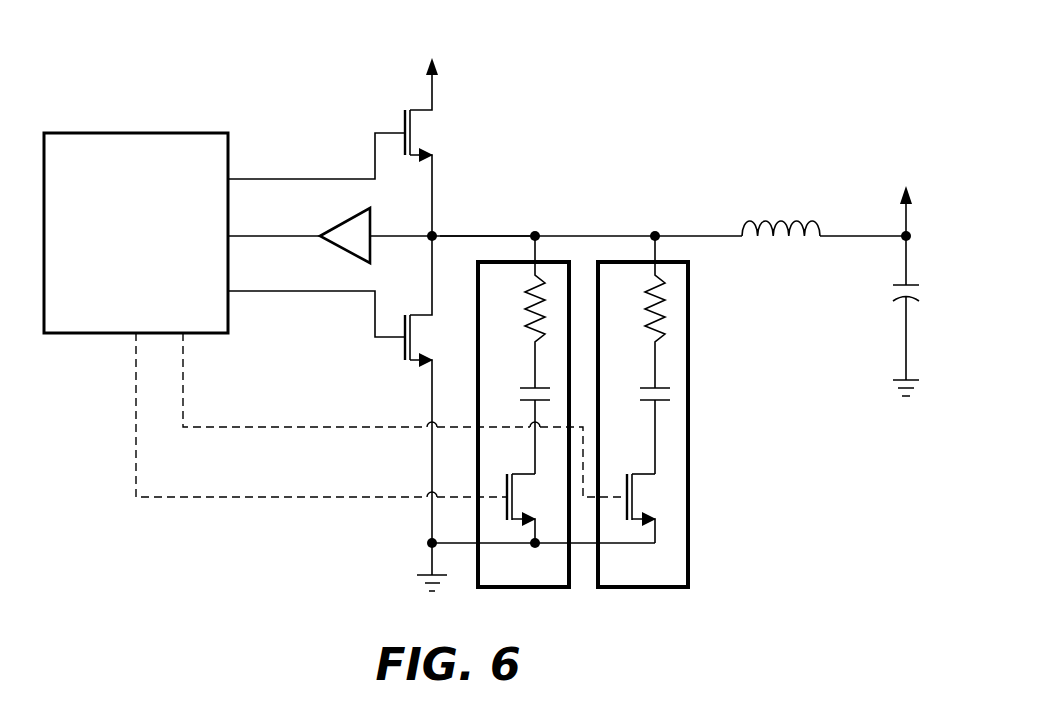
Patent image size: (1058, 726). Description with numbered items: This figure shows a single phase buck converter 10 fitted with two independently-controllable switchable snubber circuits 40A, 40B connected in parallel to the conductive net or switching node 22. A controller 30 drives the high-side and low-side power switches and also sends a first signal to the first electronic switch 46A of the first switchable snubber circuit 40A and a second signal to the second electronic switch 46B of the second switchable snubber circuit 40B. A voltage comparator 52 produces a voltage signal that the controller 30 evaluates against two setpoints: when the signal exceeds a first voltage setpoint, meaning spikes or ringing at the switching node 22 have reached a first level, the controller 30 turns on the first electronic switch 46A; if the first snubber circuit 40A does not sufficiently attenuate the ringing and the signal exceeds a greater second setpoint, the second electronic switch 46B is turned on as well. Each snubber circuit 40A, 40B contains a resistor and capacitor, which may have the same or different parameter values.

The single phase buck converter 10 is at (289, 69).
The controller 30 is at (149, 260).
The voltage comparator 52 is at (348, 212).
The switching node 22 is at (478, 236).
The first switchable snubber circuit 40A is at (498, 262).
The second switchable snubber circuit 40B is at (619, 262).
The first electronic switch 46A is at (525, 487).
The second electronic switch 46B is at (647, 495).